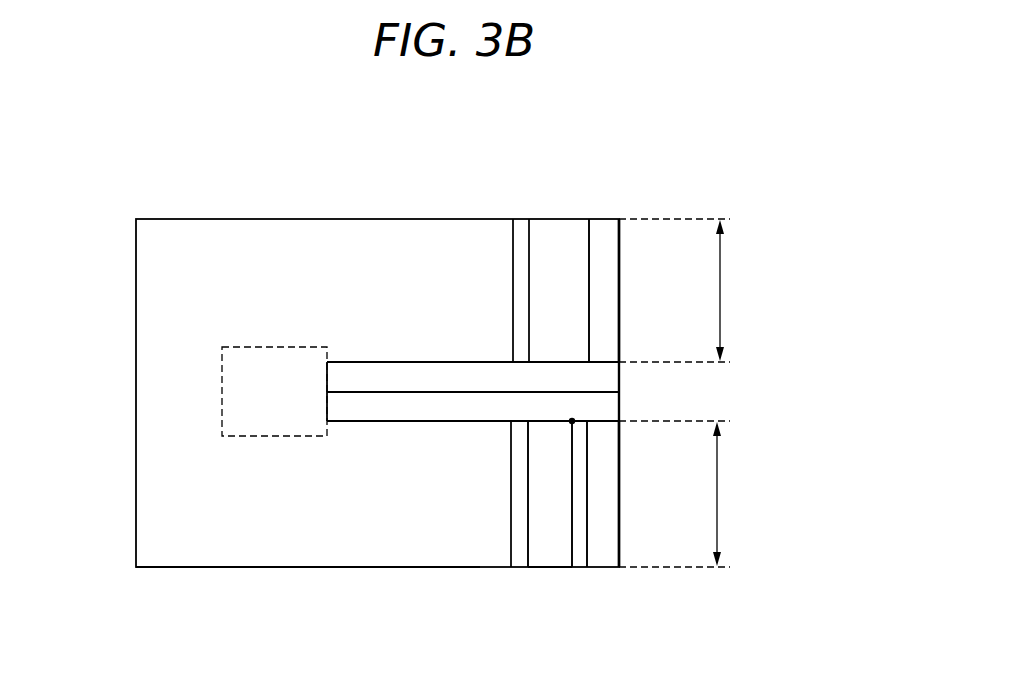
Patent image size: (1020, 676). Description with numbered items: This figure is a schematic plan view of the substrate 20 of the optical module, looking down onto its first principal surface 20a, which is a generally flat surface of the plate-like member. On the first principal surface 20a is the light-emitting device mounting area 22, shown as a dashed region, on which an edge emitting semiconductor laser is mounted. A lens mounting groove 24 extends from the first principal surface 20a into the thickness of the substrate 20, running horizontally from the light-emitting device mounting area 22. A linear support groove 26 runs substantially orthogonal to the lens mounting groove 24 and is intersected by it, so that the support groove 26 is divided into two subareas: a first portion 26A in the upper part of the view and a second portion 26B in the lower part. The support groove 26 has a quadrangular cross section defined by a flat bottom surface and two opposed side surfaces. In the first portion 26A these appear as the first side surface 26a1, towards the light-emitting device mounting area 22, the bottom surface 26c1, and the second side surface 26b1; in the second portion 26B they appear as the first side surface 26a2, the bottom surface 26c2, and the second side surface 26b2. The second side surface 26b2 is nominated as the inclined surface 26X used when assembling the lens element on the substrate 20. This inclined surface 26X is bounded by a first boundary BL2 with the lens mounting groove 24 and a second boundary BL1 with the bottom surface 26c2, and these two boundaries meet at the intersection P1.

The substrate 20 is at (683, 127).
The first principal surface 20a is at (289, 546).
The light-emitting device mounting area 22 is at (257, 347).
The lens mounting groove 24 is at (371, 367).
The support groove 26 is at (553, 219).
The first side surface in the first portion 26a1 is at (523, 219).
The first side surface in the second portion 26a2 is at (519, 562).
The second side surface in the first portion 26b1 is at (588, 262).
The second side surface in the second portion 26b2 is at (597, 560).
The inclined surface 26X is at (663, 521).
The bottom surface in the first portion 26c1 is at (577, 315).
The bottom surface in the second portion 26c2 is at (548, 558).
The first portion 26A is at (721, 287).
The second portion 26B is at (718, 497).
The intersection P1 is at (572, 421).
The second boundary BL1 is at (573, 477).
The first boundary BL2 is at (581, 424).